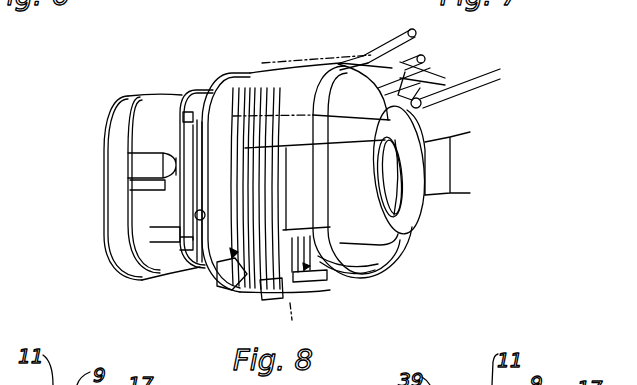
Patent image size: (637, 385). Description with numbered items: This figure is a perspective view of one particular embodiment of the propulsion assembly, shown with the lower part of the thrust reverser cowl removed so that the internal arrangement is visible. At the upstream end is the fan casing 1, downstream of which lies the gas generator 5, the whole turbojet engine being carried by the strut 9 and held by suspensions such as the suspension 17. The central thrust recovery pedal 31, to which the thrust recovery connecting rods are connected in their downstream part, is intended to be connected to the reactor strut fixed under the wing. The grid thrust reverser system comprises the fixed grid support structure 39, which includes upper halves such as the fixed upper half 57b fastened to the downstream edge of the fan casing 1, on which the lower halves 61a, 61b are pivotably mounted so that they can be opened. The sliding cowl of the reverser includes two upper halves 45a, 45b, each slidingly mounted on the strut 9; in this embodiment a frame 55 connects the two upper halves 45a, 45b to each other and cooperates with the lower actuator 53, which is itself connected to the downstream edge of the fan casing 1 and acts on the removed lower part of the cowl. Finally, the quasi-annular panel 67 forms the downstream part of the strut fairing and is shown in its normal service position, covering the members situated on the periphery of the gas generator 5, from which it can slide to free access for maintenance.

The fan casing 1 is at (173, 94).
The gas generator 5 is at (394, 173).
The strut 9 is at (302, 54).
The suspension 17 is at (392, 43).
The central thrust recovery pedal 31 is at (463, 88).
The fixed grid support structure 39 is at (216, 68).
The upper half of the sliding cowl 45a is at (435, 182).
The upper half of the sliding cowl 45b is at (420, 68).
The lower actuator 53 is at (337, 275).
The frame 55 is at (393, 267).
The fixed upper half of the grid support structure 57b is at (230, 93).
The lower half of the grid support structure 61a is at (308, 281).
The lower half of the grid support structure 61b is at (222, 277).
The quasi-annular panel 67 is at (410, 210).